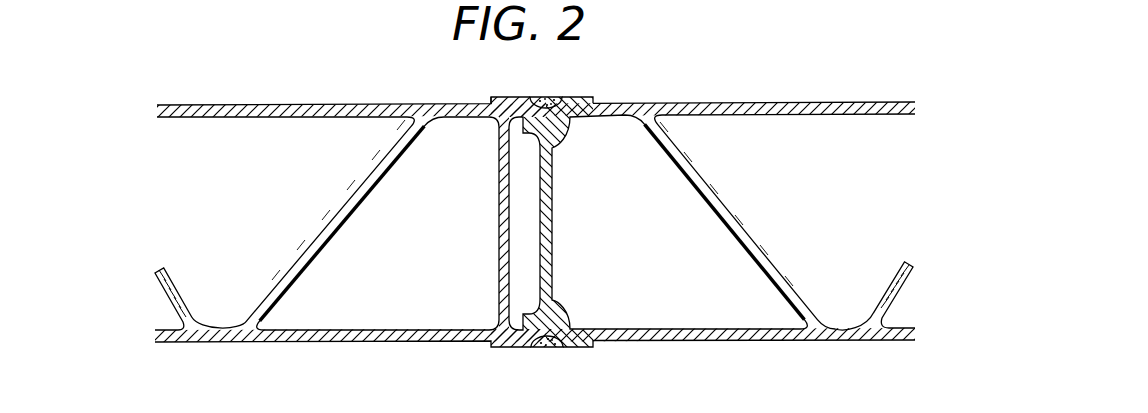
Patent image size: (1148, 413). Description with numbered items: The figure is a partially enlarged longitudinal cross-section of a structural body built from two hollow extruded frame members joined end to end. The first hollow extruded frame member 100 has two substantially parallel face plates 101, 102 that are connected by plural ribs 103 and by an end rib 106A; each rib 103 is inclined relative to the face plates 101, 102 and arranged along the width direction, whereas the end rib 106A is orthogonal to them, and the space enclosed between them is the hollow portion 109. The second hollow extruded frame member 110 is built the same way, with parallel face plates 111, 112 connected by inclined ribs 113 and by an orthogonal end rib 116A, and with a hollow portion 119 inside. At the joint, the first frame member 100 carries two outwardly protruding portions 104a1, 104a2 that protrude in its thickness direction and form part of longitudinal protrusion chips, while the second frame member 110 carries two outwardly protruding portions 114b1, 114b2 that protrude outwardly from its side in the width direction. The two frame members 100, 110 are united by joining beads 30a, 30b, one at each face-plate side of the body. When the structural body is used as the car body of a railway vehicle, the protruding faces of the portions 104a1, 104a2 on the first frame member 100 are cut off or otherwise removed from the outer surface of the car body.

The first hollow extruded frame member 100 is at (258, 84).
The face plate 101 is at (318, 104).
The face plate 102 is at (318, 343).
The rib 103 is at (338, 202).
The outwardly protruding portion 104a1 is at (495, 97).
The outwardly protruding portion 104a2 is at (500, 347).
The end rib 106A is at (497, 232).
The hollow portion 109 is at (352, 265).
The second hollow extruded frame member 110 is at (672, 88).
The face plate 111 is at (775, 104).
The face plate 112 is at (778, 343).
The rib 113 is at (733, 204).
The outwardly protruding portion 114b1 is at (590, 97).
The outwardly protruding portion 114b2 is at (595, 347).
The end rib 116A is at (554, 232).
The hollow portion 119 is at (616, 277).
The joining bead 30a is at (541, 97).
The joining bead 30b is at (546, 347).